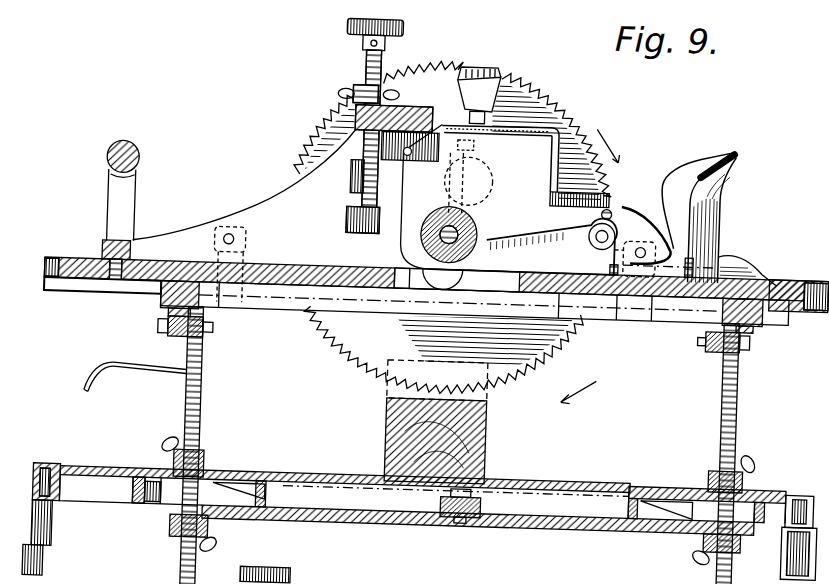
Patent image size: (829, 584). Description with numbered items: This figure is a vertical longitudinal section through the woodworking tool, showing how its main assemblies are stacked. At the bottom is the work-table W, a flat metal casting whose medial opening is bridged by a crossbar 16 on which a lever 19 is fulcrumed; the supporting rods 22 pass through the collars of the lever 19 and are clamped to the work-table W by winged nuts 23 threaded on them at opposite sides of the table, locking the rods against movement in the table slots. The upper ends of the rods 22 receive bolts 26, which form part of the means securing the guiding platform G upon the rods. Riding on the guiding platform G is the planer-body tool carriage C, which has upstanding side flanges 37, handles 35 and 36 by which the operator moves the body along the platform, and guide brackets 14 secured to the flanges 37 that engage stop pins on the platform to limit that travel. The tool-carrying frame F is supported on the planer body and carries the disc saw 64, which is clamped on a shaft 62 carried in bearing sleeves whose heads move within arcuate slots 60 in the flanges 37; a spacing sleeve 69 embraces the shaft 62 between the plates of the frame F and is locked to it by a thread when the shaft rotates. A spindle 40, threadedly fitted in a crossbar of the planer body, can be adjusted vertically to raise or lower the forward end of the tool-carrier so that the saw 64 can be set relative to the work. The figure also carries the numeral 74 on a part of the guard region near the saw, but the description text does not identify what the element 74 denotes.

The spindle 40 is at (377, 46).
The disc saw 64 is at (532, 81).
The handle 36 is at (137, 155).
The guard plate 74 is at (217, 218).
The guide bracket 14 is at (645, 232).
The shaft 62 is at (434, 208).
The spacing sleeve 69 is at (474, 216).
The handle 35 is at (677, 152).
The upstanding flange 37 is at (624, 193).
The arcuate slot 60 is at (444, 262).
The bolt 26 is at (215, 323).
The supporting rod 22 is at (204, 415).
The winged nut 23 is at (212, 452).
The crossbar 16 is at (488, 484).
The lever 19 is at (542, 507).
The planer-body tool carriage C is at (737, 243).
The guiding platform G is at (770, 292).
The tool-carrying frame F is at (501, 177).
The work-table W is at (420, 510).